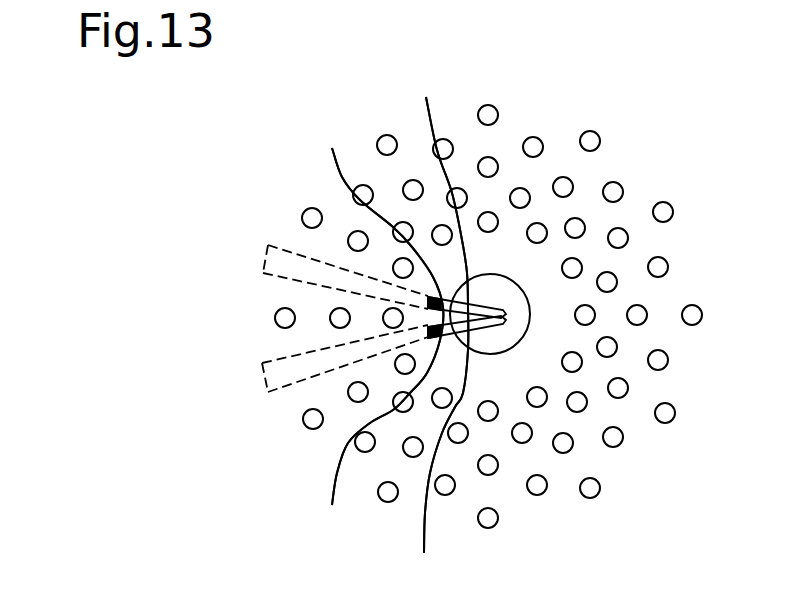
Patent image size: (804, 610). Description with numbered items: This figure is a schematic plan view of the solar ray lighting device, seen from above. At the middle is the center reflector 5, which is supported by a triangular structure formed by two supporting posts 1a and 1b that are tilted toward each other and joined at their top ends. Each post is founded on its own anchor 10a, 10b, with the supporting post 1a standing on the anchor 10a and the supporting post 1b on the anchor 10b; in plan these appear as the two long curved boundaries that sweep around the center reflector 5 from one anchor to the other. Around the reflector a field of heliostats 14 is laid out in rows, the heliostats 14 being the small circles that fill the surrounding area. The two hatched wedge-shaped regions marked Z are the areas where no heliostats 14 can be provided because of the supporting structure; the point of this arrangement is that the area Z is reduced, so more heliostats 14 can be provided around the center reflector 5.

The supporting post 1a is at (441, 344).
The supporting post 1b is at (443, 310).
The anchor 10a is at (381, 346).
The anchor 10b is at (379, 311).
The center reflector 5 is at (514, 286).
The heliostat 14 is at (622, 387).
The area where no heliostats can be provided Z is at (270, 262).